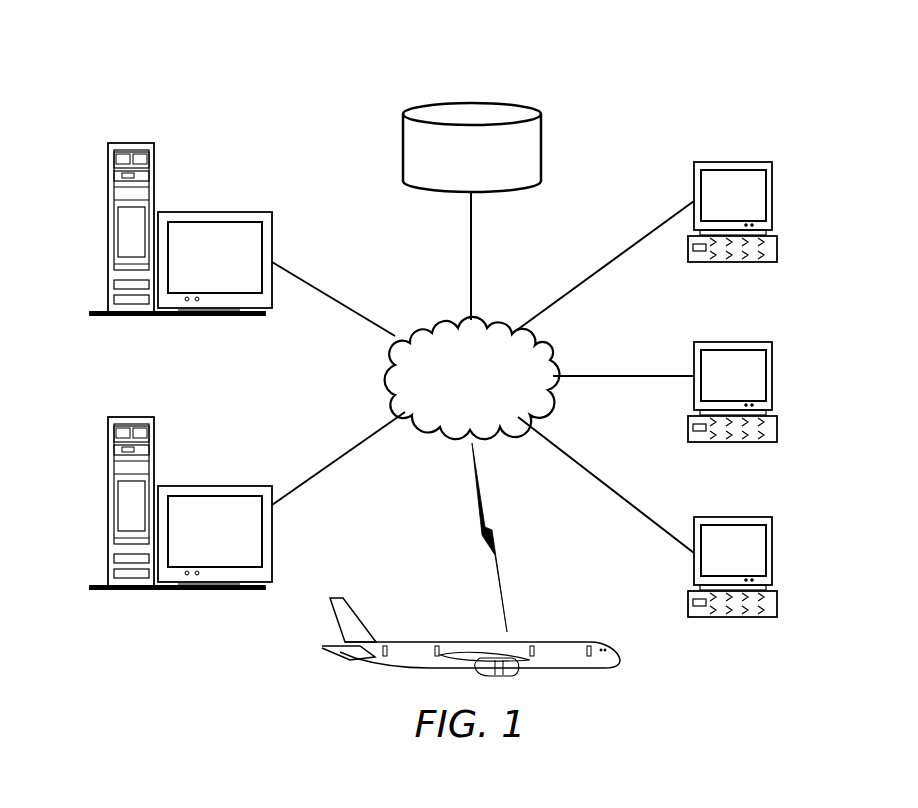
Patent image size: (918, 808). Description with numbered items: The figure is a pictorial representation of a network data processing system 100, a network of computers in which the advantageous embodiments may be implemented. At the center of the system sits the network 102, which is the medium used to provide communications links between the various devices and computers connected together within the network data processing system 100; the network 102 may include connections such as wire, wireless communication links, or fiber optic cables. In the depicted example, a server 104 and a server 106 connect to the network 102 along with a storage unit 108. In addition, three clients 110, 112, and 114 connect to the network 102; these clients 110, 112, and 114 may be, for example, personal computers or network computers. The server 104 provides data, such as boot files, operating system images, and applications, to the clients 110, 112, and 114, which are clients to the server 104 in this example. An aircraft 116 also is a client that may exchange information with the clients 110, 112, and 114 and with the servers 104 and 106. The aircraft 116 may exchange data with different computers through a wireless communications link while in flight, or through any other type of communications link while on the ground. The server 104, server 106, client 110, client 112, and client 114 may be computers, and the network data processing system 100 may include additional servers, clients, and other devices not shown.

The network data processing system 100 is at (272, 82).
The network 102 is at (442, 320).
The server 104 is at (107, 228).
The server 106 is at (107, 502).
The storage unit 108 is at (402, 148).
The client 110 is at (772, 196).
The client 112 is at (772, 374).
The client 114 is at (772, 548).
The aircraft 116 is at (606, 668).